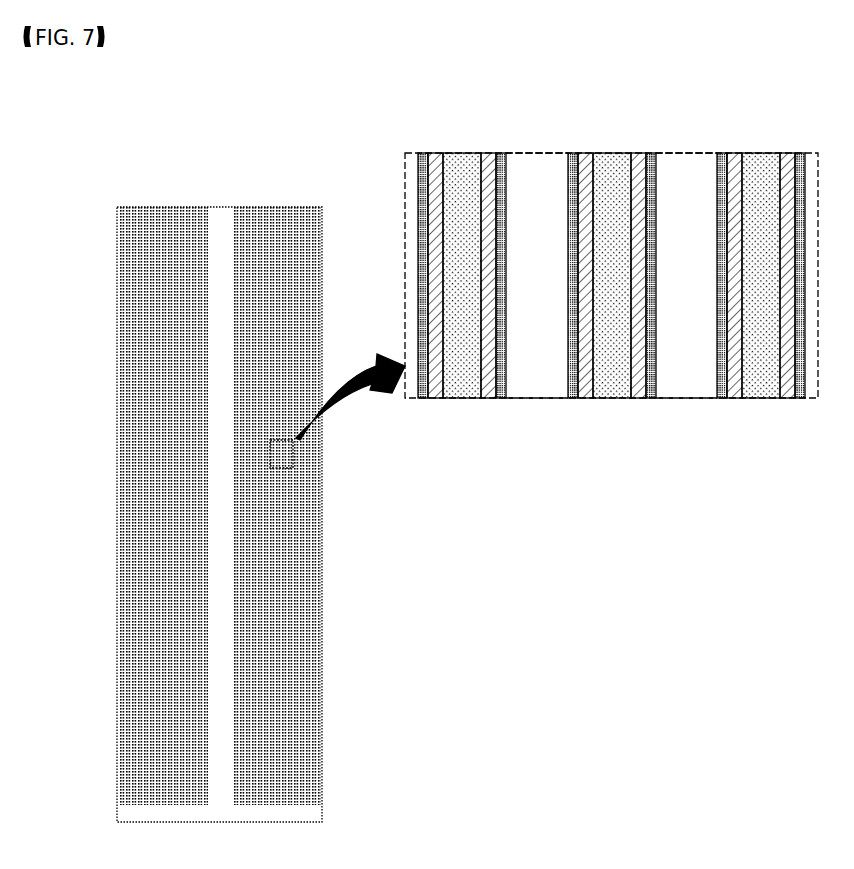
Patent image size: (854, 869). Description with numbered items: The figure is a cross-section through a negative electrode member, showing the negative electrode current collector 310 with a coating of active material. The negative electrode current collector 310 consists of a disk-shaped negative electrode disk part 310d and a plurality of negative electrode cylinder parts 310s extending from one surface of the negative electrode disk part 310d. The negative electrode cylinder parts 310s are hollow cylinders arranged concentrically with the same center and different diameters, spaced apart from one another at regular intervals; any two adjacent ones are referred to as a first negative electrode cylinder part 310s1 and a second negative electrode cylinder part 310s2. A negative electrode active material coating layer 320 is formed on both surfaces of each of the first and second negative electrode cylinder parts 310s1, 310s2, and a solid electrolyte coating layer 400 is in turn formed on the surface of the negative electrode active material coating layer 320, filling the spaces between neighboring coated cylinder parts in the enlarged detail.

The negative electrode current collector 310 is at (433, 682).
The negative electrode cylinder part 310s is at (117, 617).
The negative electrode disk part 310d is at (316, 812).
The first negative electrode cylinder part 310s1 is at (615, 380).
The second negative electrode cylinder part 310s2 is at (762, 380).
The negative electrode active material coating layer 320 is at (646, 160).
The solid electrolyte coating layer 400 is at (572, 160).